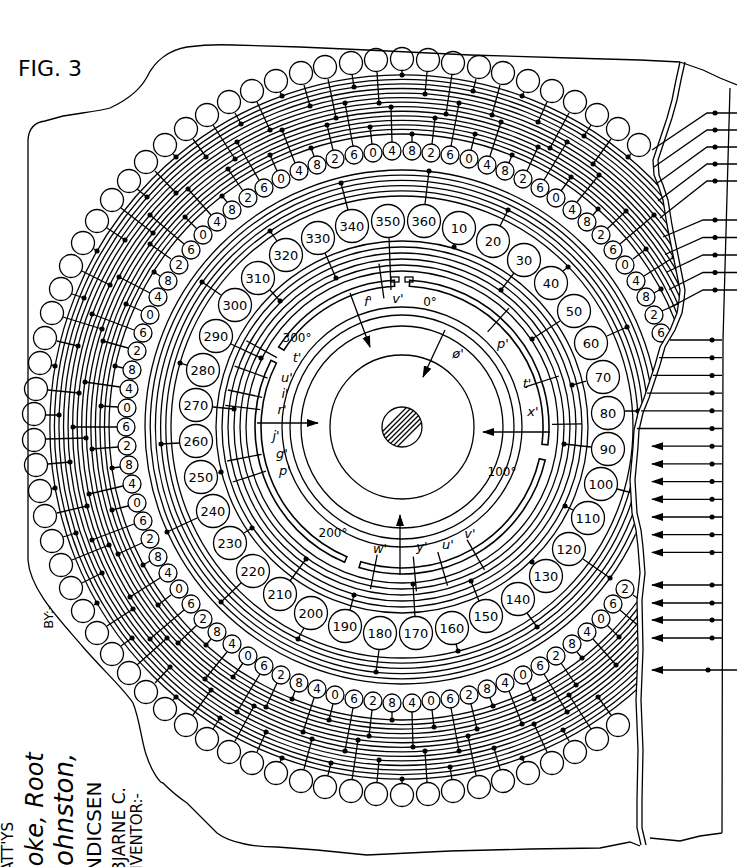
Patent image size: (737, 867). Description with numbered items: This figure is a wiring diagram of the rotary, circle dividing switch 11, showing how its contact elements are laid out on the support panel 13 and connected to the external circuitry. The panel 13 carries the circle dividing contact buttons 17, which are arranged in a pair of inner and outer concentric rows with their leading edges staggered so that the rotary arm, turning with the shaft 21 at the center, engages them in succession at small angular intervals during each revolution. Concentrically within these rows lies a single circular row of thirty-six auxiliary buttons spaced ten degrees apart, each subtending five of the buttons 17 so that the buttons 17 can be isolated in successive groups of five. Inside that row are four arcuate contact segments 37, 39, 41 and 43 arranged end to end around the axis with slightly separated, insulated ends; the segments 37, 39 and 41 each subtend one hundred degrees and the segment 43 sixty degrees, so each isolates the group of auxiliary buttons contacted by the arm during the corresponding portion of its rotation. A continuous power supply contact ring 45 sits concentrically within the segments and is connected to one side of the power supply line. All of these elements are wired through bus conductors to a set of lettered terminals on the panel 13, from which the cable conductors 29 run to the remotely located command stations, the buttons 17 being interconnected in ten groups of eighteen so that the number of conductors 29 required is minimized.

The rotary switch 11 is at (220, 780).
The support panel 13 is at (67, 127).
The contact buttons 17 is at (110, 173).
The shaft 21 is at (411, 441).
The conductors 29 is at (718, 97).
The arcuate contact segment 37 is at (490, 308).
The arcuate contact segment 39 is at (505, 515).
The arcuate contact segment 41 is at (310, 531).
The arcuate contact segment 43 is at (316, 323).
The power supply contact ring 45 is at (328, 494).